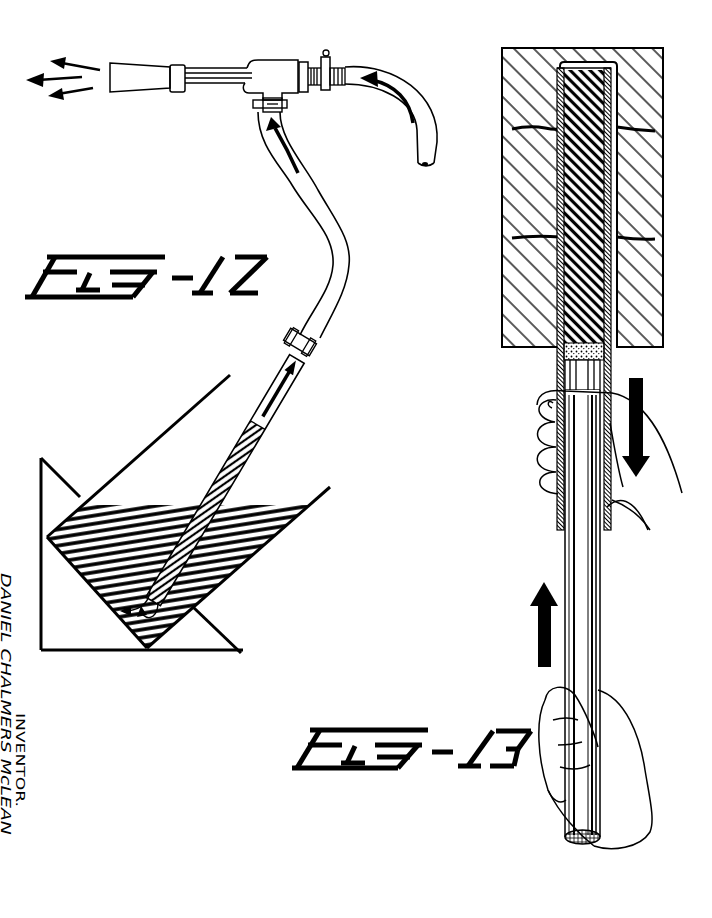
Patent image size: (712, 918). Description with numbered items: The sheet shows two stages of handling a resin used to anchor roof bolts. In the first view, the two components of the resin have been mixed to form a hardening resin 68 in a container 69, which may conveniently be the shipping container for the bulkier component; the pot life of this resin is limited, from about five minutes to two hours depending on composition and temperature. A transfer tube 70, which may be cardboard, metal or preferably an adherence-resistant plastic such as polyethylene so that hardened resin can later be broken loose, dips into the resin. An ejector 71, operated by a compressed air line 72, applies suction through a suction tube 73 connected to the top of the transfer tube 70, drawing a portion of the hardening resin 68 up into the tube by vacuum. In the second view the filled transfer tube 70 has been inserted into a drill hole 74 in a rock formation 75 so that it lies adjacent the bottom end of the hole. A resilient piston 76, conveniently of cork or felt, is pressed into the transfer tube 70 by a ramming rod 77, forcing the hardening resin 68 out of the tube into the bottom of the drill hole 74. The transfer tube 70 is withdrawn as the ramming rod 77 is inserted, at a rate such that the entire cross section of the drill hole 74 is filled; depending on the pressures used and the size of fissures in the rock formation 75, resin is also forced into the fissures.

In FIG. 12, the hardening resin 68 is at (247, 505).
In FIG. 13, the hardening resin 68 is at (613, 127).
In FIG. 12, the container 69 is at (327, 493).
In FIG. 12, the transfer tube 70 is at (284, 397).
In FIG. 13, the transfer tube 70 is at (556, 507).
In FIG. 12, the ejector 71 is at (243, 88).
In FIG. 12, the compressed air line 72 is at (395, 118).
In FIG. 12, the suction tube 73 is at (345, 223).
In FIG. 13, the drill hole 74 is at (552, 353).
In FIG. 13, the rock formation 75 is at (500, 313).
In FIG. 13, the resilient piston 76 is at (557, 370).
In FIG. 13, the ramming rod 77 is at (601, 590).